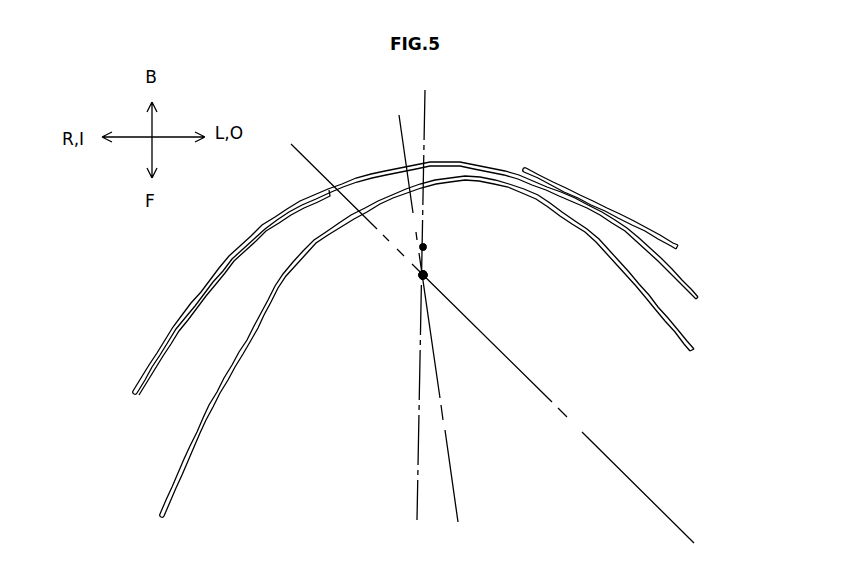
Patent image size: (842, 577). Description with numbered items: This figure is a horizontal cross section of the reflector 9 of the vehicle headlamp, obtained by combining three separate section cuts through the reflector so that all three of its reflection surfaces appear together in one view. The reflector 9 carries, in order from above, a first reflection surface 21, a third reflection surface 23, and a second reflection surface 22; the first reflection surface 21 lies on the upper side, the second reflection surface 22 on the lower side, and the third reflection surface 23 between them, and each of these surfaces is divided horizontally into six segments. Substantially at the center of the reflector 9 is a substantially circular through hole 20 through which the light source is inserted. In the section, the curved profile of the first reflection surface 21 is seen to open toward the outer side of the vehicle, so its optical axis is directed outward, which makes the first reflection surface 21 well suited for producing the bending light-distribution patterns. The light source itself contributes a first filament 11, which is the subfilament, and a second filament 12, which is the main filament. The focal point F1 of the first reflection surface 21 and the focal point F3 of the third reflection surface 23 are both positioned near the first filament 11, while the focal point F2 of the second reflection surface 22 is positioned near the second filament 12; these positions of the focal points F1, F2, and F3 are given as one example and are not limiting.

The reflector 9 is at (618, 200).
The through hole 20 is at (525, 167).
The first reflection surface 21 is at (718, 286).
The second reflection surface 22 is at (112, 430).
The third reflection surface 23 is at (147, 467).
The first filament 11 is at (420, 278).
The second filament 12 is at (427, 243).
The focal point of the first reflection surface F1 is at (423, 275).
The focal point of the second reflection surface F2 is at (427, 247).
The focal point of the third reflection surface F3 is at (463, 263).